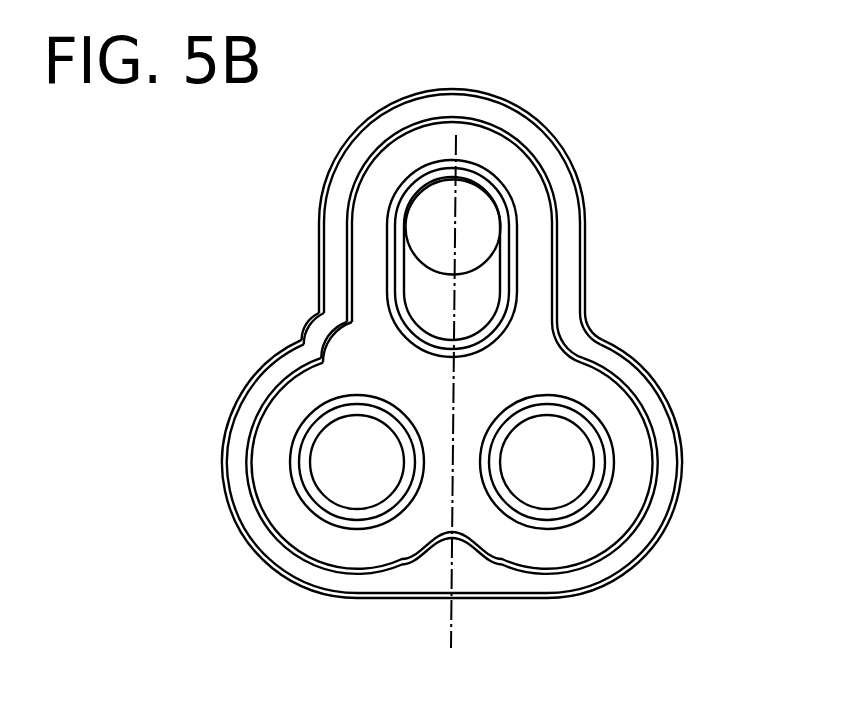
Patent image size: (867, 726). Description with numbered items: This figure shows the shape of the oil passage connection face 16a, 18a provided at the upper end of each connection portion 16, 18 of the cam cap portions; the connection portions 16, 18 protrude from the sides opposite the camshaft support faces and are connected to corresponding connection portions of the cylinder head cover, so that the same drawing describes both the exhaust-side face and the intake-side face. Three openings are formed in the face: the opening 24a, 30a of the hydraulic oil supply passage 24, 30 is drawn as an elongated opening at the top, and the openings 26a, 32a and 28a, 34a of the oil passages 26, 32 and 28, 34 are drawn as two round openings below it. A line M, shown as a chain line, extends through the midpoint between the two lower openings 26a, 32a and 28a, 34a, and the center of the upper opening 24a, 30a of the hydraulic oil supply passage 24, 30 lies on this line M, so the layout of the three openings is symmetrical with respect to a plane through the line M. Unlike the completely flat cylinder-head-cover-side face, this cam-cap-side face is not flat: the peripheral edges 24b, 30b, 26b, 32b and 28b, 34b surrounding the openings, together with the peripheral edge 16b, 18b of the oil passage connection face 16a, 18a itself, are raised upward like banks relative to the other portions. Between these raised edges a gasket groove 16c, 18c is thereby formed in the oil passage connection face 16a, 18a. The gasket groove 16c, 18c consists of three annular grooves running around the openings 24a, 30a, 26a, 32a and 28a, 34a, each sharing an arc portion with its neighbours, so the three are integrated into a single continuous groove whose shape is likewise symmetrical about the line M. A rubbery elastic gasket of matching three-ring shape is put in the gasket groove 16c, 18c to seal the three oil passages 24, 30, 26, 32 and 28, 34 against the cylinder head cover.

The connection portion 16 is at (504, 343).
The connection portion 18 is at (544, 119).
The oil passage connection face 16a is at (522, 272).
The oil passage connection face 18a is at (572, 283).
The peripheral edge 16b is at (504, 469).
The peripheral edge 18b is at (633, 376).
The gasket groove 16c is at (520, 340).
The gasket groove 18c is at (537, 371).
The hydraulic oil supply passage 24 is at (468, 198).
The hydraulic oil supply passage 30 is at (427, 223).
The opening 24a is at (568, 227).
The opening 30a is at (508, 263).
The peripheral edge 24b is at (442, 198).
The peripheral edge 30b is at (433, 173).
The oil passage 26 is at (274, 523).
The oil passage 32 is at (326, 462).
The opening 26a is at (369, 533).
The opening 32a is at (358, 508).
The peripheral edge 26b is at (278, 497).
The peripheral edge 32b is at (313, 503).
The oil passage 28 is at (641, 523).
The oil passage 34 is at (573, 457).
The opening 28a is at (593, 533).
The opening 34a is at (552, 510).
The peripheral edge 28b is at (641, 463).
The peripheral edge 34b is at (608, 487).
The line M is at (453, 620).